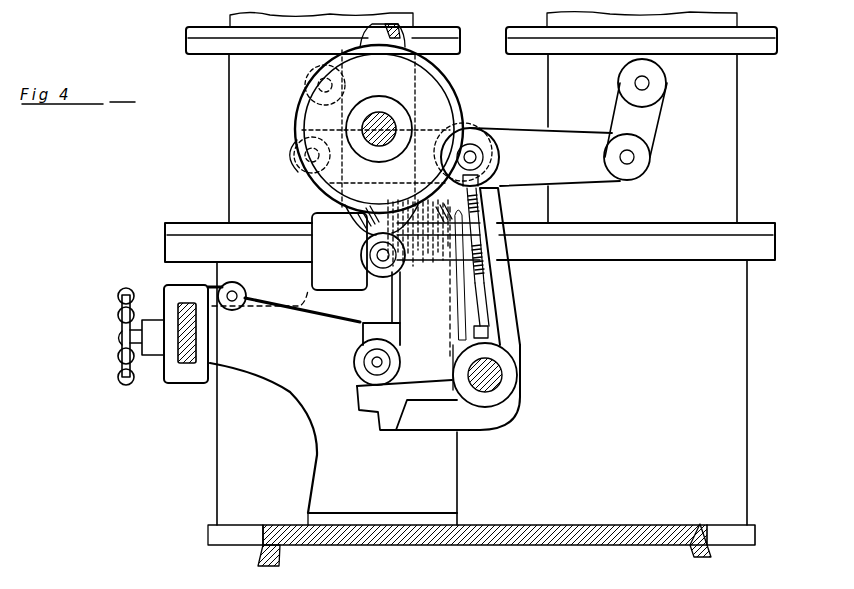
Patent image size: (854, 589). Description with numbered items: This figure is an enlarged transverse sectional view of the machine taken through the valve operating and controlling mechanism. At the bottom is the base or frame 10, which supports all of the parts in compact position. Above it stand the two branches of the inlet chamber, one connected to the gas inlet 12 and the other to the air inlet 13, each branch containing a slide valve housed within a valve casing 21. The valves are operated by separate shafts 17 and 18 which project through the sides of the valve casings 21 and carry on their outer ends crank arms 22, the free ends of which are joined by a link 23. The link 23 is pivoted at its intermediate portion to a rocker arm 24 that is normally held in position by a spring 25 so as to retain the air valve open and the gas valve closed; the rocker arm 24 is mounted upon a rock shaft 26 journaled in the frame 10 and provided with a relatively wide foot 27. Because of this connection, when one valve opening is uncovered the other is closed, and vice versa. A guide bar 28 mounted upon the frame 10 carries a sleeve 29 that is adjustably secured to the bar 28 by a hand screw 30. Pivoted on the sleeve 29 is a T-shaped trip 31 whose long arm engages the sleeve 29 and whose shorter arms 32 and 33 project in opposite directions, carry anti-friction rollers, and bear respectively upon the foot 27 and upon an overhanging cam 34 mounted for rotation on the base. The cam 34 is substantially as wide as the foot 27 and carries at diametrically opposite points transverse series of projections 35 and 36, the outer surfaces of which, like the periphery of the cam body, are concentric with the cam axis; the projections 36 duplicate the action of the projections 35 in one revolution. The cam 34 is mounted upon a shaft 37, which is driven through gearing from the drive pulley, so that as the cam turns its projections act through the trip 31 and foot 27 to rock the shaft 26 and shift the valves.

The base or frame 10 is at (675, 533).
The gas inlet 12 is at (737, 16).
The air inlet 13 is at (232, 20).
The shaft 17 is at (650, 83).
The shaft 18 is at (310, 82).
The valve casings 21 is at (236, 160).
The crank arms 22 is at (296, 115).
The link 23 is at (560, 157).
The rocker arm 24 is at (503, 303).
The spring 25 is at (461, 221).
The rock shaft 26 is at (510, 364).
The foot 27 is at (377, 405).
The guide bar 28 is at (190, 363).
The sleeve 29 is at (171, 368).
The hand screw 30 is at (121, 345).
The trip 31 is at (284, 302).
The shorter arm 32 is at (384, 348).
The shorter arm 33 is at (367, 270).
The cam 34 is at (433, 91).
The projections 35 is at (380, 34).
The projections 36 is at (385, 210).
The shaft 37 is at (397, 120).